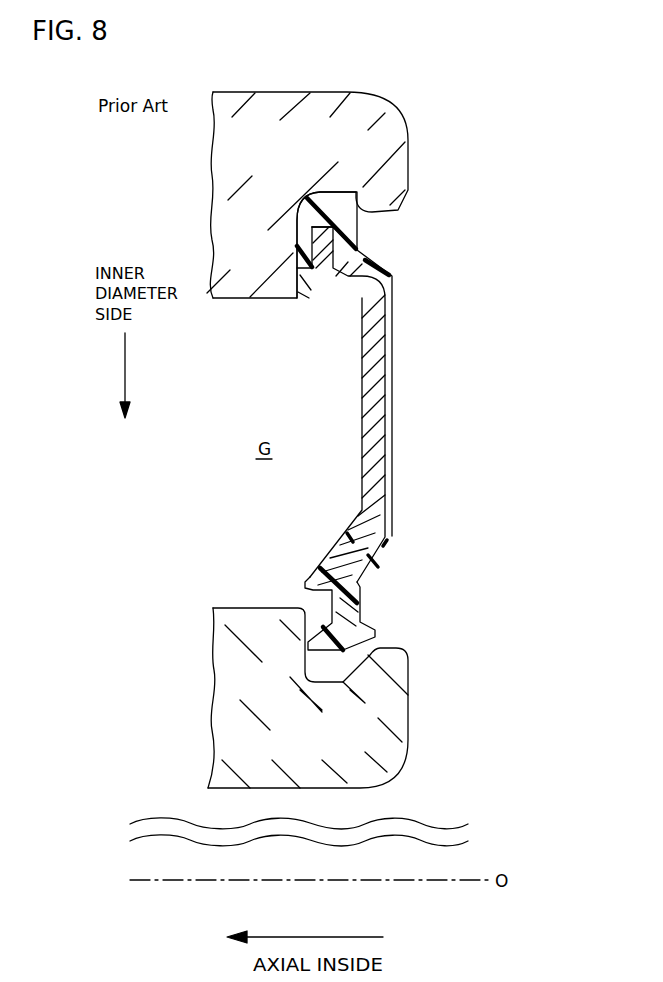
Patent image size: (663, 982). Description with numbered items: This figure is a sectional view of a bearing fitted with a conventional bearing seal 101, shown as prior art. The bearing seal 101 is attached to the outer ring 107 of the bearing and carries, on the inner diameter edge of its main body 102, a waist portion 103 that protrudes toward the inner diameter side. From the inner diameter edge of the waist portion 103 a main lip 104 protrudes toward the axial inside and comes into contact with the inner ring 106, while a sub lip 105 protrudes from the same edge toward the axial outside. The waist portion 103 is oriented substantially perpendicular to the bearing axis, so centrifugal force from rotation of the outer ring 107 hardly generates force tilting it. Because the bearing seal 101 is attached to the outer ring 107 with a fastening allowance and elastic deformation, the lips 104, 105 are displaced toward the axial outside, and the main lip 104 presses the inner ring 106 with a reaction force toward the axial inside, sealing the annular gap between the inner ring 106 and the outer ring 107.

The bearing seal 101 is at (310, 424).
The main body 102 is at (394, 413).
The waist portion 103 is at (355, 603).
The main lip 104 is at (325, 650).
The sub lip 105 is at (374, 633).
The inner ring 106 is at (397, 705).
The outer ring 107 is at (398, 163).